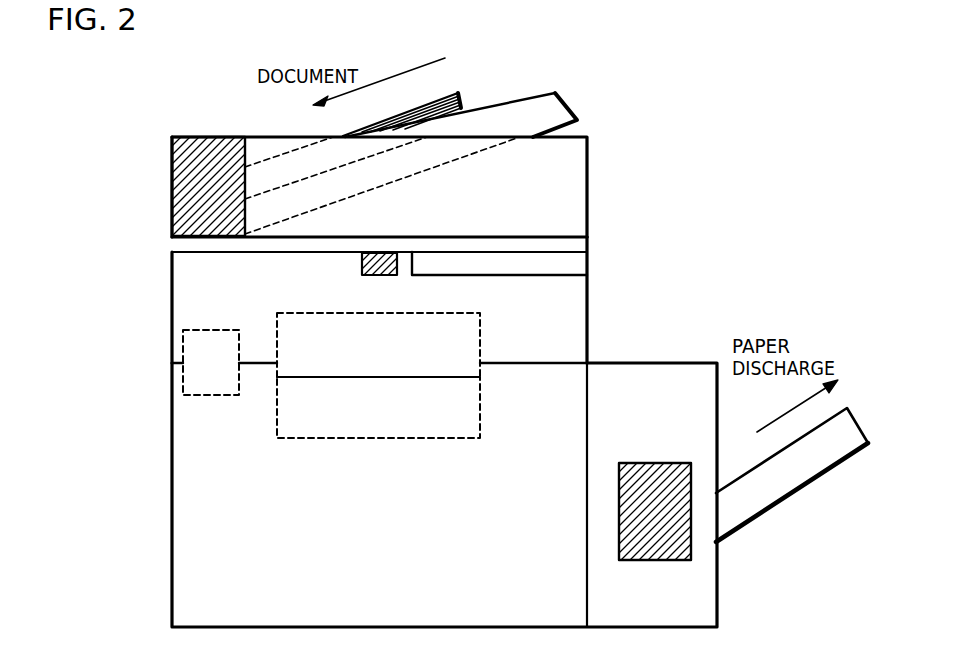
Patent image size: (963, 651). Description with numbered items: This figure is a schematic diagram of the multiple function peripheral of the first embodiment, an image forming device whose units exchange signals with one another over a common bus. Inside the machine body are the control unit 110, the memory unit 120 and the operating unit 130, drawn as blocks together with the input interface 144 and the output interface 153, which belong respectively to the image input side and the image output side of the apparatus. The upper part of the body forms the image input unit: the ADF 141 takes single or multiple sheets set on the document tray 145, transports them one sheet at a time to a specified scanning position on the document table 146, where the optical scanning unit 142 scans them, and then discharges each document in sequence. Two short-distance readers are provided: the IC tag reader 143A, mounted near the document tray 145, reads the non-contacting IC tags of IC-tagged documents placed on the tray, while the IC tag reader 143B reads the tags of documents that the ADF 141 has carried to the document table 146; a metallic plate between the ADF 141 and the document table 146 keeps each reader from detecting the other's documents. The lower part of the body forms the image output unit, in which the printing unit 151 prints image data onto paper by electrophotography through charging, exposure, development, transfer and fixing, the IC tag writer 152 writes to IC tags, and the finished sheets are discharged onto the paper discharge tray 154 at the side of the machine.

The control unit 110 is at (482, 335).
The memory unit 120 is at (482, 422).
The operating unit 130 is at (588, 272).
The ADF 141 is at (588, 181).
The optical scanning unit 142 is at (588, 336).
The IC tag reader 143A is at (172, 157).
The IC tag reader 143B is at (380, 252).
The input interface 144 is at (227, 396).
The document tray 145 is at (568, 100).
The document table 146 is at (588, 241).
The printing unit 151 is at (172, 500).
The IC tag writer 152 is at (691, 555).
The output interface 153 is at (203, 396).
The paper discharge tray 154 is at (768, 505).